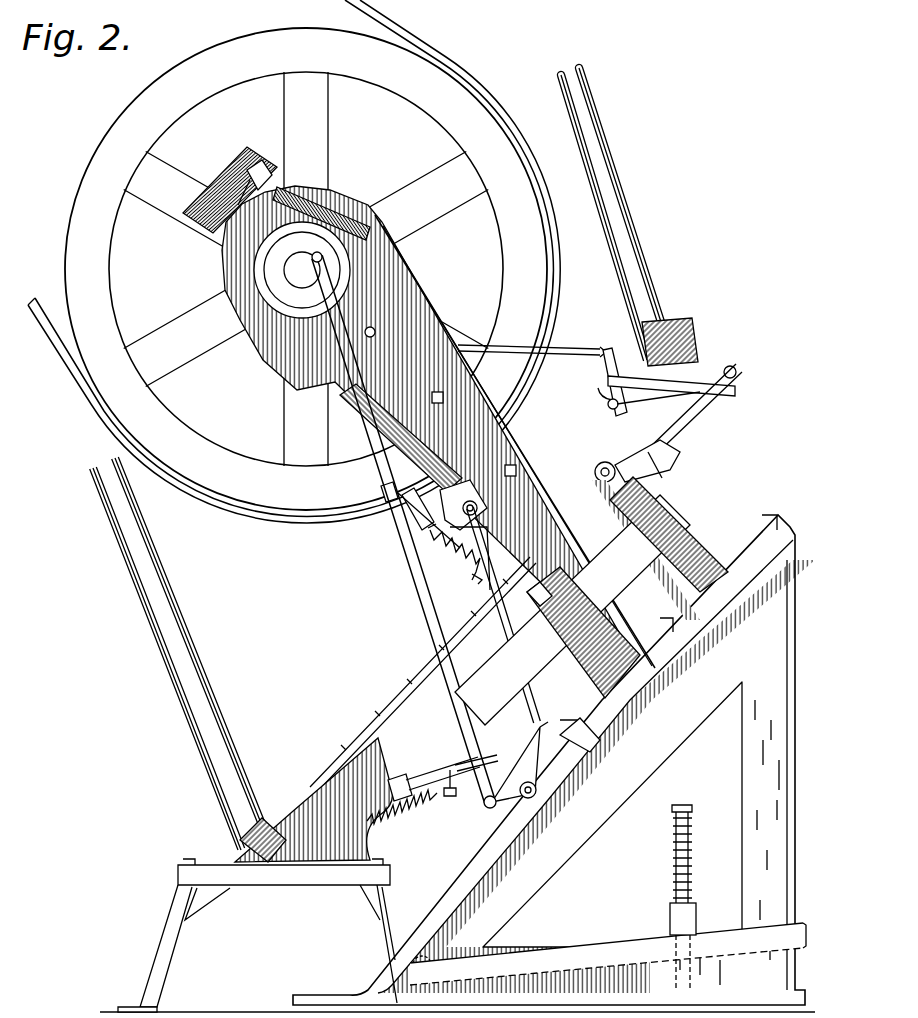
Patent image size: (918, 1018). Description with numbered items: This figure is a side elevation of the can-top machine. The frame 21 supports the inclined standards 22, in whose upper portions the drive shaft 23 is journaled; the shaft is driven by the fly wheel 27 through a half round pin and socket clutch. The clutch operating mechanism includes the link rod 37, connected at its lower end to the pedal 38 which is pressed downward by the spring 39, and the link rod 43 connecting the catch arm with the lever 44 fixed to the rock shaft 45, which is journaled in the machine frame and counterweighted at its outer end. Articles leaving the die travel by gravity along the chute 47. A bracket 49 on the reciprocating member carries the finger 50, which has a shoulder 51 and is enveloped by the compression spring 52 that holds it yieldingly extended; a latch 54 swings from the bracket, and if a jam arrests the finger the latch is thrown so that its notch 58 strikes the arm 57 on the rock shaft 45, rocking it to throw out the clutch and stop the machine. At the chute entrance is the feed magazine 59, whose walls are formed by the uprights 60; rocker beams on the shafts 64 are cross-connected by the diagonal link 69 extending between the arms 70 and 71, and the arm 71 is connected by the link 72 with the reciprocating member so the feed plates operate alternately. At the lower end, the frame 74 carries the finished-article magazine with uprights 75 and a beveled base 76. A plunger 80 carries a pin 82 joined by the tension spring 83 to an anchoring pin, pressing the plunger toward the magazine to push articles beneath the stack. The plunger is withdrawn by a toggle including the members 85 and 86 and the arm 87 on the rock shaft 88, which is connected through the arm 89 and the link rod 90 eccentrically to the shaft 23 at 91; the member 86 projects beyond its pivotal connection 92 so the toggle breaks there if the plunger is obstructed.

The frame 21 is at (462, 900).
The inclined standards 22 is at (537, 440).
The drive shaft 23 is at (300, 282).
The fly wheel 27 is at (512, 262).
The link rod 37 is at (518, 697).
The pedal 38 is at (614, 940).
The spring 39 is at (672, 870).
The link rod 43 is at (403, 438).
The lever 44 is at (470, 485).
The rock shaft 45 is at (478, 508).
The chute 47 is at (476, 638).
The bracket 49 is at (381, 489).
The finger 50 is at (502, 615).
The shoulder 51 is at (458, 590).
The compression spring 52 is at (452, 556).
The latch 54 is at (412, 510).
The arm 57 is at (482, 520).
The notch 58 is at (430, 534).
The feed magazine 59 is at (700, 360).
The uprights 60 is at (650, 292).
The rocker beam shafts 64 is at (618, 408).
The link 69 is at (598, 388).
The arm 70 is at (740, 384).
The arm 71 is at (610, 366).
The link 72 is at (566, 352).
The frame 74 is at (292, 888).
The uprights 75 is at (240, 765).
The base 76 is at (242, 848).
The plunger 80 is at (415, 780).
The pin 82 is at (450, 798).
The tension spring 83 is at (413, 812).
The toggle member 85 is at (460, 763).
The toggle member 86 is at (505, 748).
The arm 87 is at (565, 735).
The rock shaft 88 is at (522, 785).
The arm 89 is at (500, 808).
The link rod 90 is at (420, 598).
The eccentric connection 91 is at (318, 257).
The pivotal connection 92 is at (495, 760).